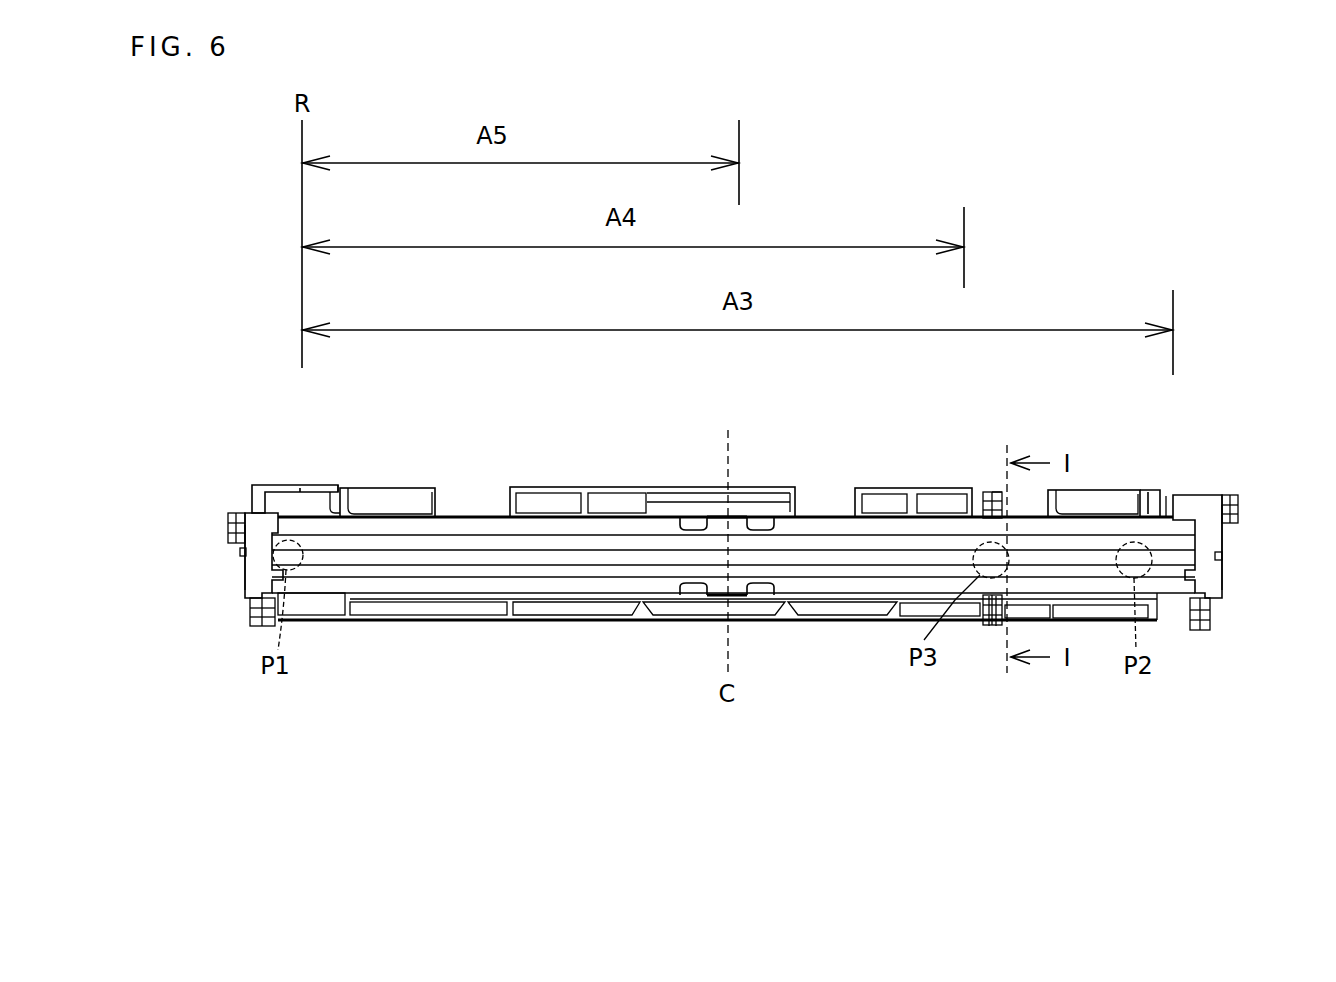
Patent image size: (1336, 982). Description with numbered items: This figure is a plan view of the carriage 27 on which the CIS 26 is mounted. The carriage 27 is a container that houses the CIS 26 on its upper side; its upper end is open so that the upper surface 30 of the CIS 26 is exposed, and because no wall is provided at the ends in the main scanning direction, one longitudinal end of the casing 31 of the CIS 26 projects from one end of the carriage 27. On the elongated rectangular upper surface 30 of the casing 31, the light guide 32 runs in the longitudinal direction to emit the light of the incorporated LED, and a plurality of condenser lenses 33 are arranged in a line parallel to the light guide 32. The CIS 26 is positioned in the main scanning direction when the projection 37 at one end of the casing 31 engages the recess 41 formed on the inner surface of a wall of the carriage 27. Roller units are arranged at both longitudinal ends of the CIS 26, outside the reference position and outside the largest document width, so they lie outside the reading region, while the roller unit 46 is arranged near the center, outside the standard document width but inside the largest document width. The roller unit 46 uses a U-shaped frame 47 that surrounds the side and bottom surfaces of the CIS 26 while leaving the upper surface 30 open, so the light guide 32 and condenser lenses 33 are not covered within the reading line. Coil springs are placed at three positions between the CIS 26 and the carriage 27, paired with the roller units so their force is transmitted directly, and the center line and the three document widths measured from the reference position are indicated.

The CIS 26 is at (472, 508).
The carriage 27 is at (486, 633).
The upper surface 30 is at (925, 532).
The casing 31 is at (610, 522).
The light guide 32 is at (817, 540).
The condenser lenses 33 is at (852, 578).
The projection 37 is at (313, 612).
The recess 41 is at (353, 610).
The roller unit 46 is at (996, 474).
The frame 47 is at (992, 630).